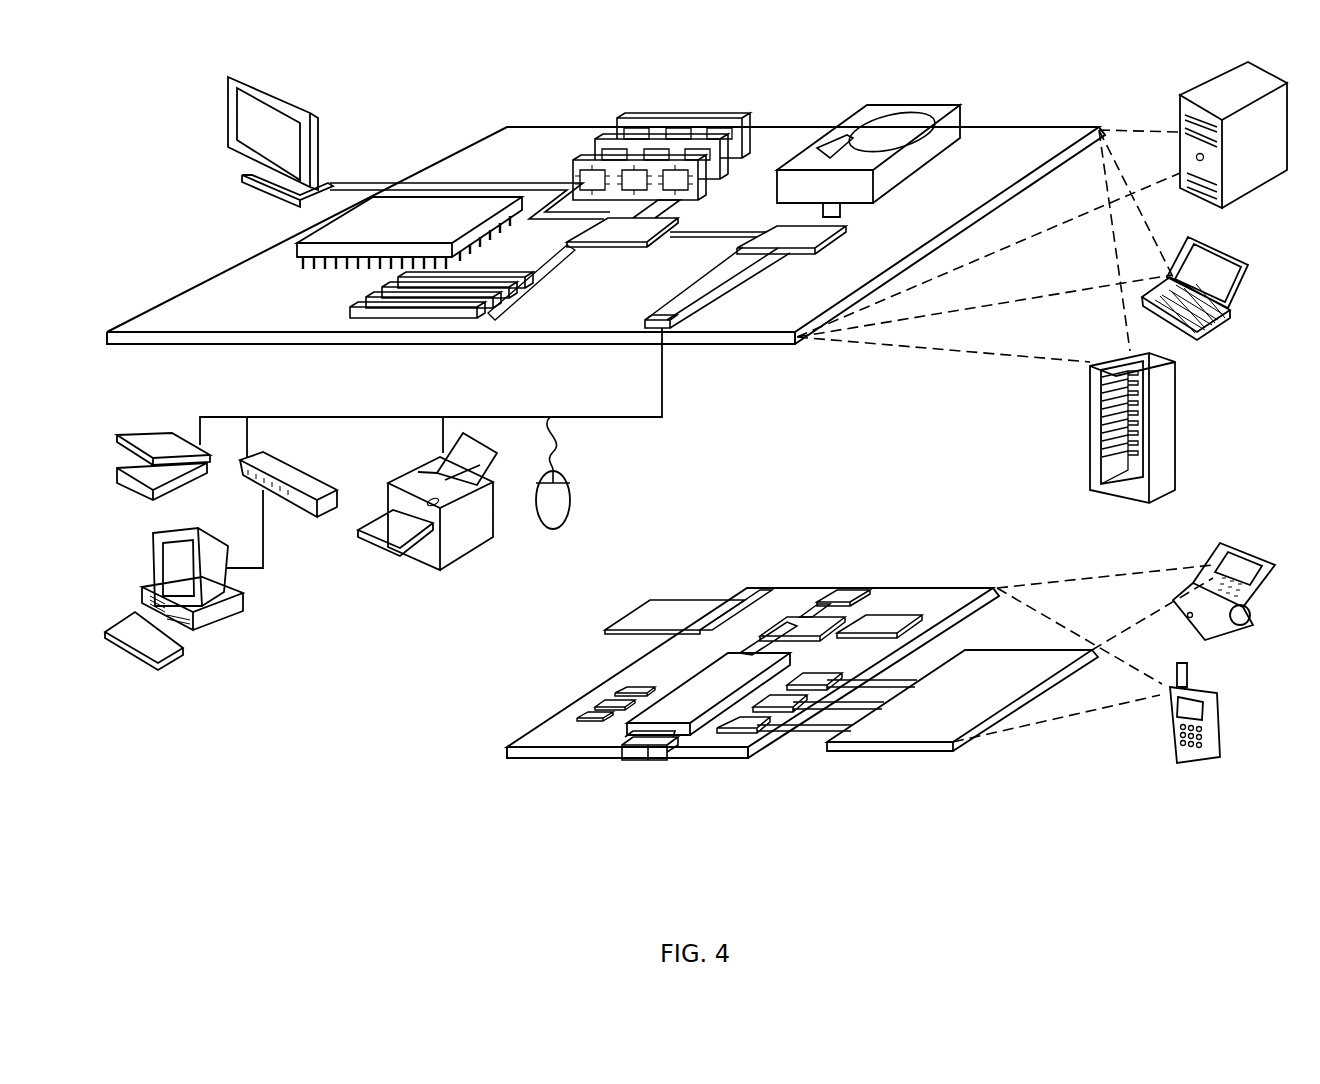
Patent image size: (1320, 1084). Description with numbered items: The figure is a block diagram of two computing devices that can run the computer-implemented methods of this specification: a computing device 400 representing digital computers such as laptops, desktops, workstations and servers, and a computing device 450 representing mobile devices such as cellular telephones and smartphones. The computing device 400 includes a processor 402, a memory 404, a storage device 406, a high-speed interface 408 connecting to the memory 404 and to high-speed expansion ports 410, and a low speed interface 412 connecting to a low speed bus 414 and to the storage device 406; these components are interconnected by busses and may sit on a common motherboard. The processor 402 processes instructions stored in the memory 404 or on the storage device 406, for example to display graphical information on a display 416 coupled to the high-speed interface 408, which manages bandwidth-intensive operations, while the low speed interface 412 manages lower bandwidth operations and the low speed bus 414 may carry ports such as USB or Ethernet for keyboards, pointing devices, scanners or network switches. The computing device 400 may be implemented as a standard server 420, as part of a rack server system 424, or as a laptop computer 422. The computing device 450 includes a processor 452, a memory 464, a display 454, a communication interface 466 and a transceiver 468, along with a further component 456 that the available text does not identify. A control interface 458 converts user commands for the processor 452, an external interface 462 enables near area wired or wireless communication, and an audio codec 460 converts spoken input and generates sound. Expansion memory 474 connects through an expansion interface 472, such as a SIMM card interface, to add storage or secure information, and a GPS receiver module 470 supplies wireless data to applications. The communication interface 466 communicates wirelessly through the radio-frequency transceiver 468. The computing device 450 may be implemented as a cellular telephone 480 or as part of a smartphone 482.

The computing device 400 is at (428, 105).
The processor 402 is at (297, 247).
The memory 404 is at (637, 123).
The storage device 406 is at (866, 106).
The high-speed interface 408 is at (600, 232).
The high-speed expansion ports 410 is at (373, 304).
The low speed interface 412 is at (773, 232).
The low speed bus 414 is at (668, 333).
The display 416 is at (234, 78).
The standard server 420 is at (1182, 114).
The laptop computer 422 is at (1250, 262).
The rack server system 424 is at (1090, 452).
The computing device 450 is at (485, 754).
The processor 452 is at (682, 713).
The display 454 is at (918, 733).
The component pad 456 is at (753, 717).
The control interface 458 is at (785, 702).
The audio codec 460 is at (808, 680).
The external interface 462 is at (648, 745).
The memory 464 is at (598, 707).
The communication interface 466 is at (802, 623).
The transceiver 468 is at (878, 625).
The GPS receiver module 470 is at (852, 588).
The expansion interface 472 is at (730, 602).
The expansion memory 474 is at (653, 602).
The cellular telephone 480 is at (1233, 555).
The smartphone 482 is at (1165, 723).